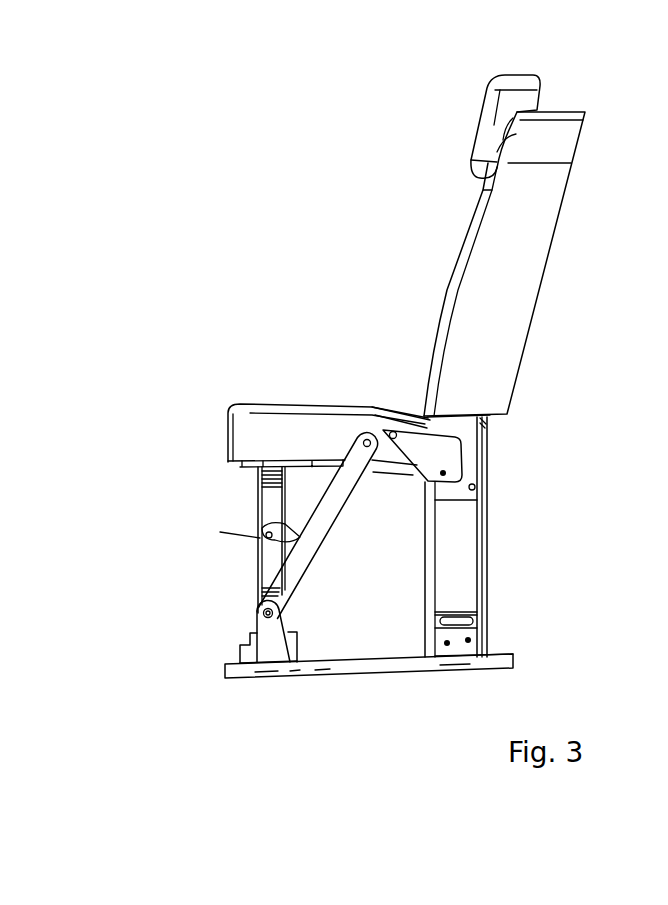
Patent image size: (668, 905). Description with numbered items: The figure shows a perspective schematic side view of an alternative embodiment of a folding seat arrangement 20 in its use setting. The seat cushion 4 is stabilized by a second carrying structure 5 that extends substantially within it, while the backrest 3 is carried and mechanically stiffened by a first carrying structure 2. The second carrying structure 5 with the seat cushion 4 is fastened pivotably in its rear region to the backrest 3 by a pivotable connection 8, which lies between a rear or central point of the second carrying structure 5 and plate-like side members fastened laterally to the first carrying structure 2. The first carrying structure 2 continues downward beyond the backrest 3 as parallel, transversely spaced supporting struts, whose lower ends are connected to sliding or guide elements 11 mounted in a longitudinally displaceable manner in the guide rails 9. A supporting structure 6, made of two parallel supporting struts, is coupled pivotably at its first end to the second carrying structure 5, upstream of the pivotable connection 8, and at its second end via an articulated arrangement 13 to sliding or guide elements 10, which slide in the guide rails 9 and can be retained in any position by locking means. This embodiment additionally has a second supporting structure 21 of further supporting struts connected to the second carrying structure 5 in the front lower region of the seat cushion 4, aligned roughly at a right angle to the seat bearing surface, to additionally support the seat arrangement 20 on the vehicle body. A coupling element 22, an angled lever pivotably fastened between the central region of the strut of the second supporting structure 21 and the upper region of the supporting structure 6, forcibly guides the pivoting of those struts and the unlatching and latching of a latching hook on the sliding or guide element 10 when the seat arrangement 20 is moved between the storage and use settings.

The folding seat arrangement 20 is at (244, 243).
The backrest 3 is at (518, 270).
The pivotable connection 8 is at (392, 430).
The first carrying structure 2 is at (478, 456).
The second carrying structure 5 is at (350, 498).
The seat cushion 4 is at (270, 442).
The supporting structure 6 is at (333, 500).
The coupling element 22 is at (297, 527).
The articulated arrangement 13 is at (280, 610).
The sliding or guide elements 11 is at (460, 660).
The second supporting structure 21 is at (270, 565).
The sliding or guide elements 10 is at (258, 650).
The guide rails 9 is at (335, 673).